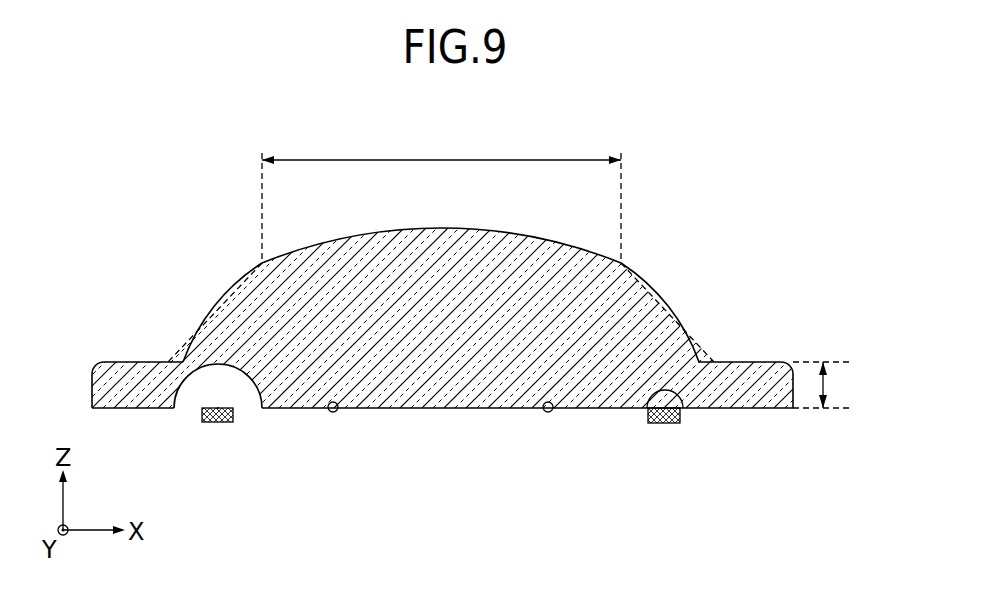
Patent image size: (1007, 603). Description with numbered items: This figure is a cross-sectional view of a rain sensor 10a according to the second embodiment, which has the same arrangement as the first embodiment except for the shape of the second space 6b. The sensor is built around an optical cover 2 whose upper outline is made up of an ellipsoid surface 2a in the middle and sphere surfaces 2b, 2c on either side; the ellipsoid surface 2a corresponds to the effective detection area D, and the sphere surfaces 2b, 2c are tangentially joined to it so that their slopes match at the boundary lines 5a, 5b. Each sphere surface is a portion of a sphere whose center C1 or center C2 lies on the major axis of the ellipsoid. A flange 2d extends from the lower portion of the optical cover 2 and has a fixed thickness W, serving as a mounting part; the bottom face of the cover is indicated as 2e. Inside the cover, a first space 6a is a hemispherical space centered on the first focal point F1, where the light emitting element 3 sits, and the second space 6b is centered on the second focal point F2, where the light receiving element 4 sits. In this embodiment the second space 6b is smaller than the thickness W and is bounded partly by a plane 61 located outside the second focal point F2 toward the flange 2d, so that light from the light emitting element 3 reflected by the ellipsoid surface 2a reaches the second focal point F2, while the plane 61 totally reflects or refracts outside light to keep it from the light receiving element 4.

The rain sensor 10a is at (192, 191).
The optical cover 2 is at (553, 229).
The ellipsoid surface 2a is at (338, 240).
The sphere surface 2b is at (212, 312).
The sphere surface 2c is at (673, 312).
The flange 2d is at (760, 362).
The bottom surface of lens 2e is at (444, 410).
The light emitting element 3 is at (215, 417).
The light receiving element 4 is at (703, 453).
The plane 61 is at (686, 412).
The boundary line 5a is at (261, 262).
The boundary line 5b is at (623, 262).
The first space 6a is at (191, 394).
The second space 6b is at (657, 398).
The first focal point F1 is at (232, 413).
The second focal point F2 is at (663, 413).
The center C1 is at (336, 418).
The center C2 is at (545, 418).
The effective detection area D is at (441, 194).
The thickness W is at (825, 385).